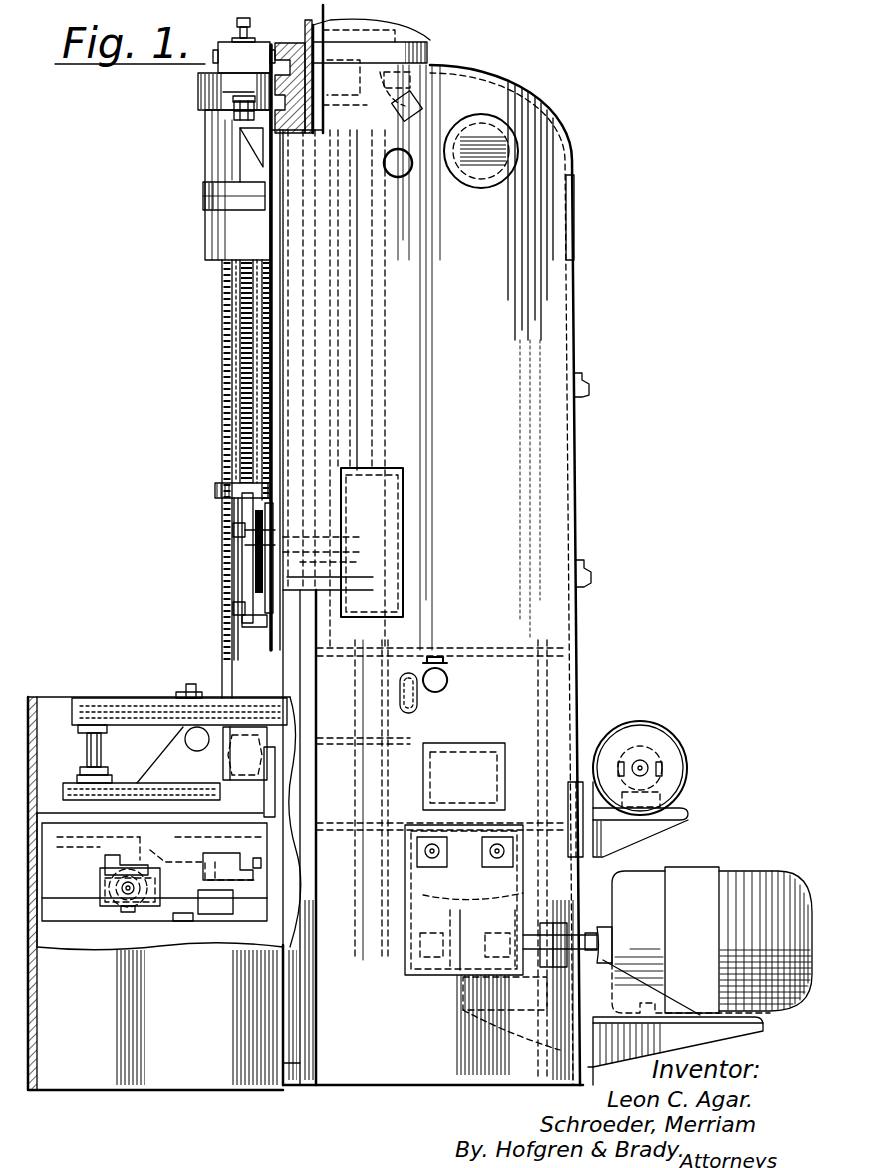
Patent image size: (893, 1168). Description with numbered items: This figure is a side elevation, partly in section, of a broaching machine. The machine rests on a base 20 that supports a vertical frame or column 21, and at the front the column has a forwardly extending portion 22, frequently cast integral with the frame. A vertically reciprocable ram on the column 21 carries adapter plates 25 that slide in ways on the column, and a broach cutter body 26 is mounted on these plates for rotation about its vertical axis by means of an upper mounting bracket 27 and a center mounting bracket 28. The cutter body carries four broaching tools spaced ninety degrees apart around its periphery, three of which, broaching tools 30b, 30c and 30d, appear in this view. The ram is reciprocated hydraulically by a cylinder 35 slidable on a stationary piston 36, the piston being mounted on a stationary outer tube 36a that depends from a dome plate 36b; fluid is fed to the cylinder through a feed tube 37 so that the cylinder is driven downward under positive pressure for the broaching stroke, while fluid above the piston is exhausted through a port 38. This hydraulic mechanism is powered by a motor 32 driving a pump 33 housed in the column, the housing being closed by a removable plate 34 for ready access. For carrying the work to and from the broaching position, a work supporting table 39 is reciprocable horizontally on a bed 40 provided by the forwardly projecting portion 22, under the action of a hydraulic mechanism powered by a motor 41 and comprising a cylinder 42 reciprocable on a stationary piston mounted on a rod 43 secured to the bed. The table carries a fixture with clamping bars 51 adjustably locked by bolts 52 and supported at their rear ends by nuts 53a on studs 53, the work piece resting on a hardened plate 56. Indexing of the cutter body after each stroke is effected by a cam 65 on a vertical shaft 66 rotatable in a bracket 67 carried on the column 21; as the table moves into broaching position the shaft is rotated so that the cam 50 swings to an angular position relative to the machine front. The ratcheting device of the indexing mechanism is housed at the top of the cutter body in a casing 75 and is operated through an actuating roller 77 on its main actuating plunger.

The base 20 is at (360, 1080).
The vertical frame or column 21 is at (565, 249).
The forwardly extending portion 22 is at (105, 1080).
The adapter plates 25 is at (262, 290).
The broach cutter body 26 is at (232, 362).
The upper mounting bracket 27 is at (215, 238).
The center mounting bracket 28 is at (227, 488).
The broaching tool 30b is at (228, 400).
The broaching tool 30c is at (242, 418).
The broaching tool 30d is at (263, 432).
The motor 32 is at (743, 877).
The pump 33 is at (395, 857).
The removable plate 34 is at (407, 898).
The cylinder 35 is at (236, 125).
The stationary piston 36 is at (237, 565).
The stationary outer tube 36a is at (290, 70).
The dome plate 36b is at (285, 47).
The feed tube 37 is at (300, 90).
The port 38 is at (258, 543).
The work supporting table 39 is at (82, 836).
The bed 40 is at (107, 862).
The motor 41 is at (688, 760).
The cylinder 42 is at (128, 897).
The rod 43 is at (95, 907).
The cam 50 is at (263, 743).
The clamping bars 51 is at (150, 698).
The bolts 52 is at (192, 682).
The studs 53 is at (90, 747).
The nuts 53a is at (77, 727).
The hardened plate 56 is at (220, 775).
The cam 65 is at (245, 575).
The vertical shaft 66 is at (263, 600).
The bracket 67 is at (272, 597).
The casing 75 is at (247, 100).
The actuating roller 77 is at (277, 113).